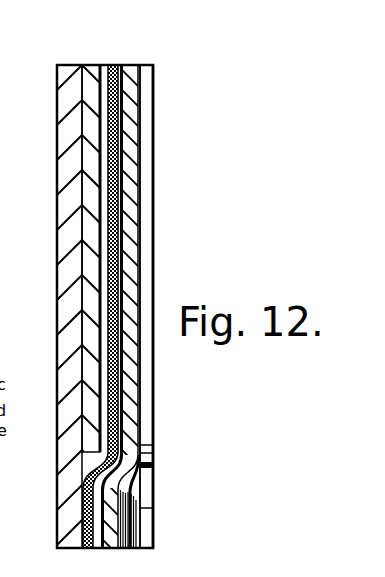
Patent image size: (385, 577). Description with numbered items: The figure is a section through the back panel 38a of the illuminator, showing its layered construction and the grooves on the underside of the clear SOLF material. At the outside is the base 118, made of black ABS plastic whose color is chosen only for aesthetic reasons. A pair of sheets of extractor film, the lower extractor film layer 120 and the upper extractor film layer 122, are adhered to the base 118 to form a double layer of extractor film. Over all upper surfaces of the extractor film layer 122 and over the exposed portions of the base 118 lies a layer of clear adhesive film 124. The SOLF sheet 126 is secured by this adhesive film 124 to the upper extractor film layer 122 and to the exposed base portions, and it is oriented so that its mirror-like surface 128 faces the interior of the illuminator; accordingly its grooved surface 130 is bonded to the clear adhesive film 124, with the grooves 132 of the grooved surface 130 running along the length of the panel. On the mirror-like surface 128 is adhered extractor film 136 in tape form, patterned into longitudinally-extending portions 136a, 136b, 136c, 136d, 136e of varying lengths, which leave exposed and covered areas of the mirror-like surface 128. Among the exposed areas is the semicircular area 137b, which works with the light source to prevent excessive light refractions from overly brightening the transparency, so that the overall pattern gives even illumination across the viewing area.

The back panel 38a is at (161, 152).
The base 118 is at (67, 147).
The extractor film layer 120 is at (90, 72).
The extractor film layer 122 is at (103, 200).
The clear adhesive film 124 is at (112, 72).
The SOLF sheet 126 is at (152, 82).
The mirror-like surface 128 is at (147, 123).
The grooved surface 130 is at (123, 290).
The grooves 132 is at (125, 345).
The extractor film 136 is at (155, 75).
The extractor film portion 136a is at (145, 420).
The extractor film portion 136b is at (153, 450).
The extractor film portion 136c is at (155, 463).
The extractor film portion 136d is at (143, 488).
The extractor film portion 136e is at (147, 528).
The semicircular area 137b is at (132, 548).